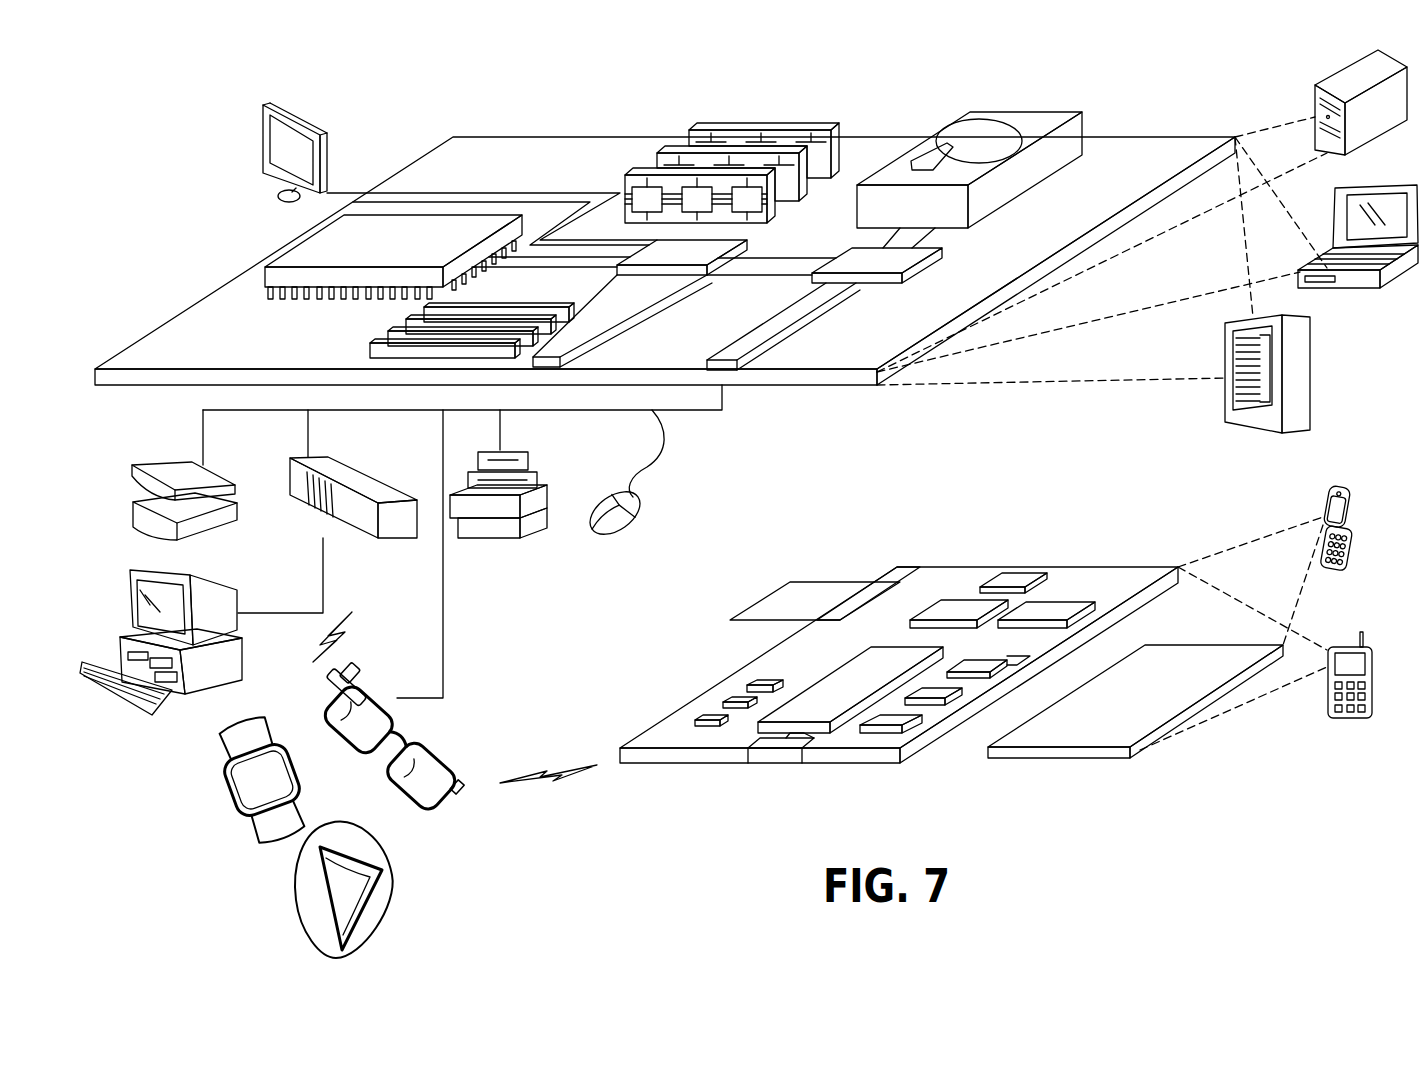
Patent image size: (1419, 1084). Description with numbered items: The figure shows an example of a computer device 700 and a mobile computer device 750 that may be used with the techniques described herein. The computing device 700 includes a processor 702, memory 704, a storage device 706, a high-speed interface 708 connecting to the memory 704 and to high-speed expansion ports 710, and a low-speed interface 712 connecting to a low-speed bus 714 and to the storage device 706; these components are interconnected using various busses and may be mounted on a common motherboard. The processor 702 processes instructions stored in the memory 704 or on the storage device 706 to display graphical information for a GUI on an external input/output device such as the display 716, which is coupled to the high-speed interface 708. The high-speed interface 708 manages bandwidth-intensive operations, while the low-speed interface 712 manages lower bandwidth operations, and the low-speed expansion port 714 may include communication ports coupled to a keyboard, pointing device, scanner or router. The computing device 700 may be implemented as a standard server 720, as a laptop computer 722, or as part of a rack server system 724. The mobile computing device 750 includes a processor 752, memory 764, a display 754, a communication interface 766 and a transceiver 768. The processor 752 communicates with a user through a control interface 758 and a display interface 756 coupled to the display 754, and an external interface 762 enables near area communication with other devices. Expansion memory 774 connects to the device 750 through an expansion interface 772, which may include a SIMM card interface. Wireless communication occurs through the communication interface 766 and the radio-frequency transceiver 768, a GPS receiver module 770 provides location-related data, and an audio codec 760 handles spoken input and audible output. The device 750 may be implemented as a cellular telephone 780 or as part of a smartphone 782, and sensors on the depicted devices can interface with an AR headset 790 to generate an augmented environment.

The computing device 700 is at (400, 80).
The processor 702 is at (291, 251).
The memory 704 is at (766, 128).
The storage device 706 is at (1013, 112).
The high-speed interface 708 is at (697, 250).
The high-speed expansion ports 710 is at (400, 332).
The low-speed interface 712 is at (847, 256).
The low-speed expansion port 714 is at (728, 356).
The display 716 is at (268, 104).
The standard server 720 is at (1337, 78).
The laptop computer 722 is at (1395, 186).
The rack server system 724 is at (1312, 372).
The mobile computer device 750 is at (668, 652).
The processor 752 is at (818, 697).
The display 754 is at (1177, 663).
The display interface 756 is at (900, 720).
The control interface 758 is at (940, 692).
The audio codec 760 is at (983, 660).
The external interface 762 is at (777, 750).
The memory 764 is at (728, 703).
The communication interface 766 is at (960, 603).
The transceiver 768 is at (1058, 600).
The GPS receiver module 770 is at (1012, 580).
The expansion interface 772 is at (880, 582).
The expansion memory 774 is at (792, 582).
The cellular telephone 780 is at (1333, 487).
The smartphone 782 is at (1345, 645).
The AR headset/HMD device 790 is at (448, 815).